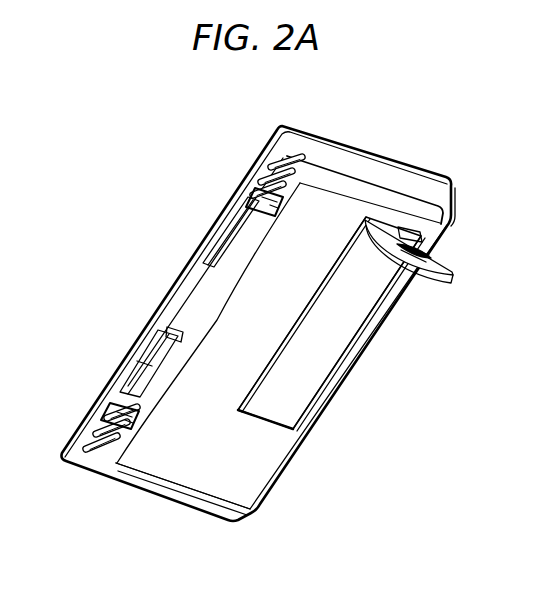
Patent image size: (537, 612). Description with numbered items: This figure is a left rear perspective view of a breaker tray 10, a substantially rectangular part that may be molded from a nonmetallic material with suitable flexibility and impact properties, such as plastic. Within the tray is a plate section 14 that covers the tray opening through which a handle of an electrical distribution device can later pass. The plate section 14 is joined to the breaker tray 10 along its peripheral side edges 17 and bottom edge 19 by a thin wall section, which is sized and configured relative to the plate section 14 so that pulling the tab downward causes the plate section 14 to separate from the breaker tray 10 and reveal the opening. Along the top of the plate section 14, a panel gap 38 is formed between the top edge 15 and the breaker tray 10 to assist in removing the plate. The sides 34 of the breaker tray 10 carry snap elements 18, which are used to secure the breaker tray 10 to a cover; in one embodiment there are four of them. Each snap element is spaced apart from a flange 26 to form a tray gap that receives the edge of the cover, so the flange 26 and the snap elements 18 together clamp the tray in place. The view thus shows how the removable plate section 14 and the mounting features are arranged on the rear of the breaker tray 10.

The breaker tray 10 is at (282, 126).
The plate section 14 is at (360, 310).
The top edge 15 is at (453, 270).
The peripheral side edges 17 is at (335, 378).
The snap elements 18 is at (237, 227).
The bottom edge 19 is at (268, 427).
The flange 26 is at (372, 158).
The sides 34 is at (184, 304).
The panel gap 38 is at (403, 229).